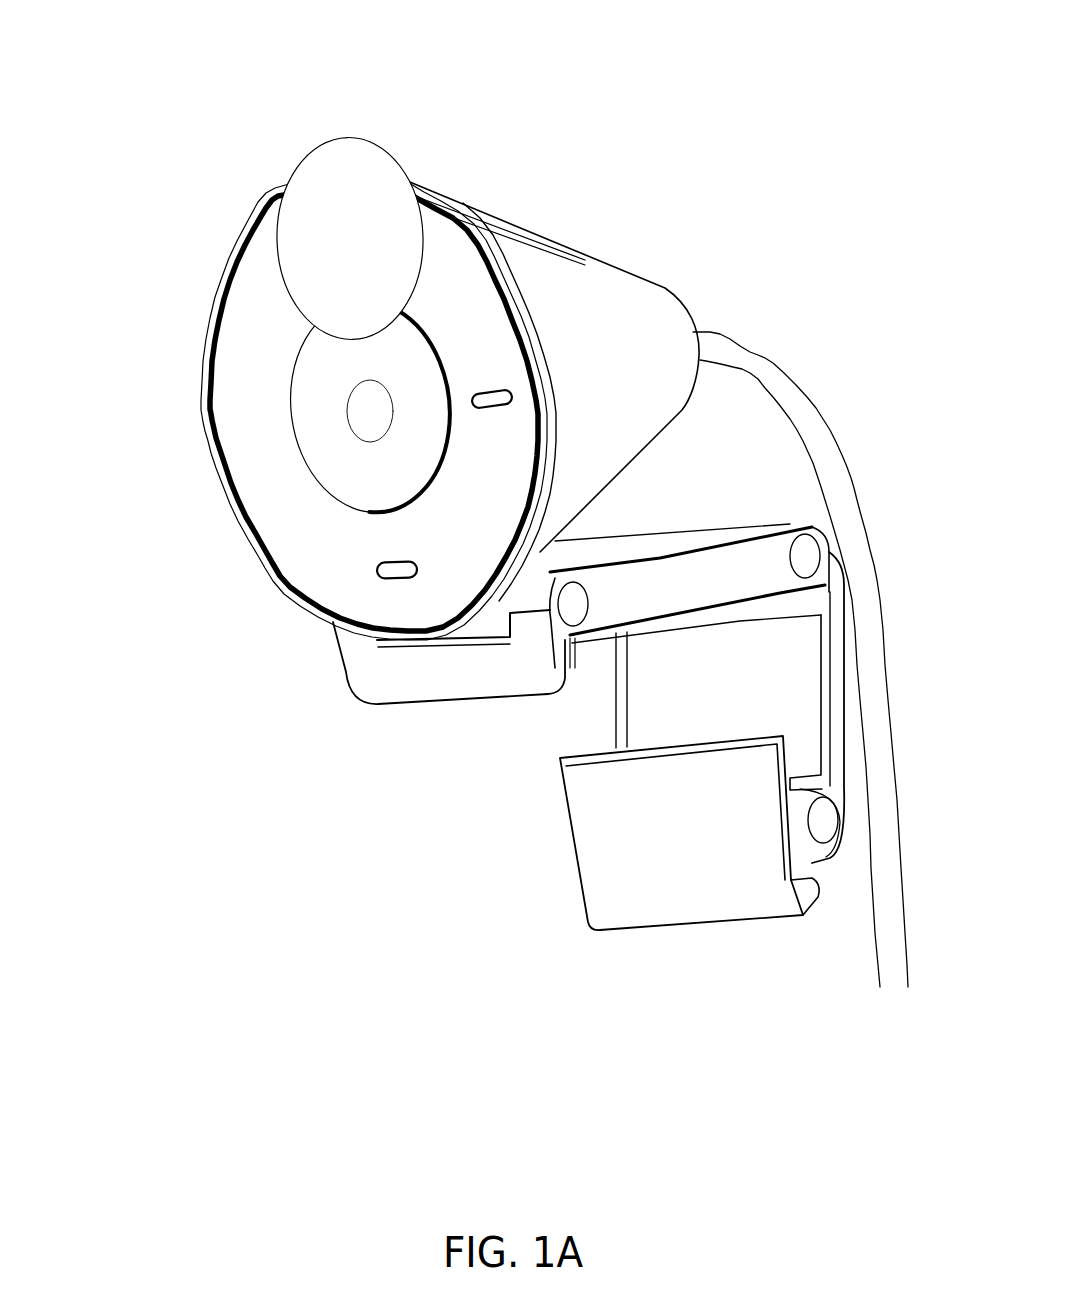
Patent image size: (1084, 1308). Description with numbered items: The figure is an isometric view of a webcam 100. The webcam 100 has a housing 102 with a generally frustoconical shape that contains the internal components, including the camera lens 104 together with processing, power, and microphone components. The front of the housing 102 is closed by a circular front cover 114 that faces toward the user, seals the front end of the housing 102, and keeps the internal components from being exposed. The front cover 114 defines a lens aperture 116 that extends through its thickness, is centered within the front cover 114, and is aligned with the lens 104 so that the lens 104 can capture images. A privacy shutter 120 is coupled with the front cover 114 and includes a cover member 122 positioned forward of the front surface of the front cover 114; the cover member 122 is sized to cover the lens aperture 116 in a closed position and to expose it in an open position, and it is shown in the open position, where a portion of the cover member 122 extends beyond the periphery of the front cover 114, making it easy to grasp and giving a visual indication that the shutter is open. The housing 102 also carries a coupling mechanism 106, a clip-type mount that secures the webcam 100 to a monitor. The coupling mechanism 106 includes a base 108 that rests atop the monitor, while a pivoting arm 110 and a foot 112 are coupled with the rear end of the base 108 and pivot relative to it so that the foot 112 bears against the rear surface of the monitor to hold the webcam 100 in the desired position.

The webcam 100 is at (124, 104).
The housing 102 is at (580, 270).
The camera lens 104 is at (372, 410).
The coupling mechanism 106 is at (410, 818).
The base 108 is at (718, 573).
The pivoting arm 110 is at (803, 700).
The foot 112 is at (712, 895).
The front cover 114 is at (242, 353).
The lens aperture 116 is at (340, 385).
The privacy shutter 120 is at (330, 137).
The cover member 122 is at (393, 210).